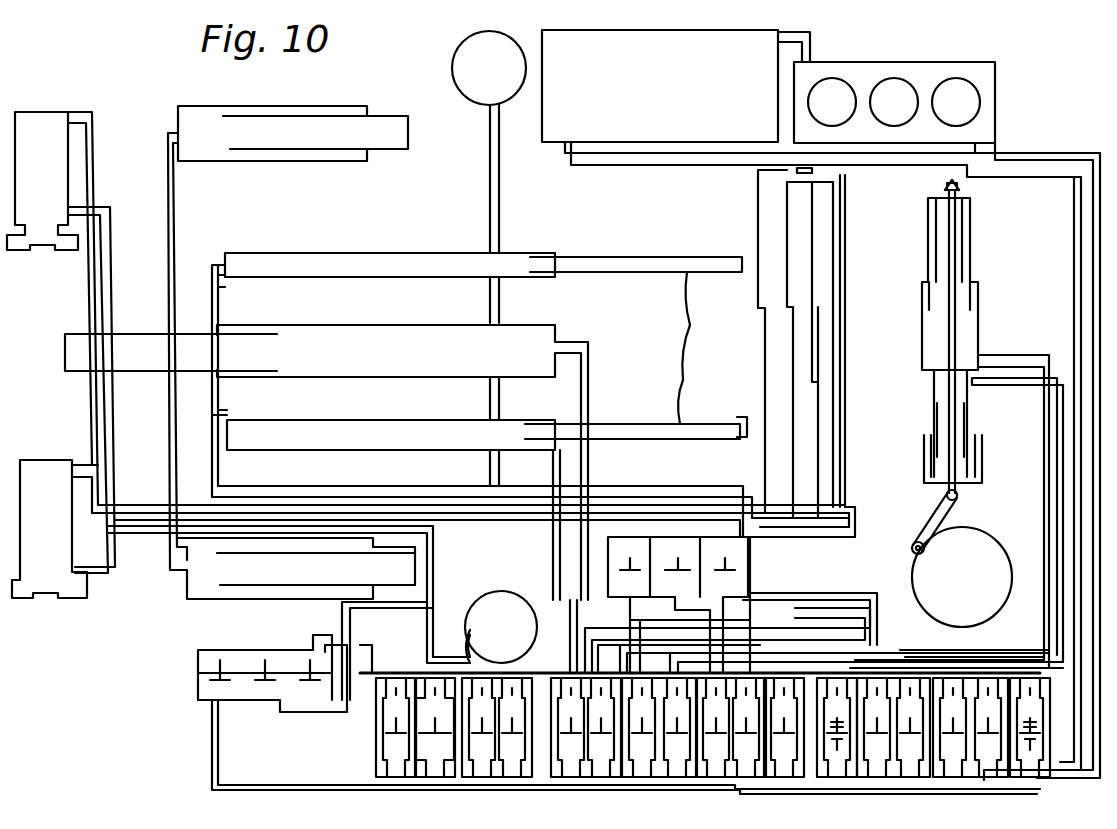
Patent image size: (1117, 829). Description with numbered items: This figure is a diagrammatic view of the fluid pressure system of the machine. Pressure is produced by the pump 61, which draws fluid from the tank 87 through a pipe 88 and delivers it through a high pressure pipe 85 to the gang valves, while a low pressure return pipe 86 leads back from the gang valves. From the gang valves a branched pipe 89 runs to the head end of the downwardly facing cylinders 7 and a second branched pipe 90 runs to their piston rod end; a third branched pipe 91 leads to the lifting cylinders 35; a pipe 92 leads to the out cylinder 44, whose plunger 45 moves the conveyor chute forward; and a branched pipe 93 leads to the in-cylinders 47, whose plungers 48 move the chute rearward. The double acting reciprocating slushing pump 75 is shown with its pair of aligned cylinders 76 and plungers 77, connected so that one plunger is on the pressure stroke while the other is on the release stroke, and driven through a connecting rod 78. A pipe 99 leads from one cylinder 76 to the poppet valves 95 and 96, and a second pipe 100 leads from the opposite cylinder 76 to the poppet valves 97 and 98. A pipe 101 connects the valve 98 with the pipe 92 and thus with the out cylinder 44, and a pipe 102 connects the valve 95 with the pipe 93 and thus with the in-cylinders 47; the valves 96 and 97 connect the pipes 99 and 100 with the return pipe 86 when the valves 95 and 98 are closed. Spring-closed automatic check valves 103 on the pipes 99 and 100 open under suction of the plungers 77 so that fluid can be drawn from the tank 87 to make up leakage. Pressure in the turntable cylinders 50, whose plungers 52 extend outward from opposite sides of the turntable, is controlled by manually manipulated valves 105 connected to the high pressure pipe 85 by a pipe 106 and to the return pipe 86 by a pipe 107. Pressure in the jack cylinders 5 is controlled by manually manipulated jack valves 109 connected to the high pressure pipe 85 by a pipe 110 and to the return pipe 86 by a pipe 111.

The fluid pressure cylinder 5 is at (456, 66).
The fluid pressure cylinder 7 is at (38, 112).
The cylinder 35 is at (283, 106).
The fluid pressure cylinder 44 is at (343, 325).
The plunger 45 is at (128, 345).
The fluid pressure cylinder 47 is at (366, 253).
The plunger 48 is at (677, 348).
The cylinder 50 is at (760, 290).
The plunger 52 is at (837, 237).
The pump 61 is at (888, 62).
The slushing pump 75 is at (920, 330).
The cylinder 76 is at (924, 295).
The plunger 77 is at (970, 240).
The connecting rod 78 is at (925, 510).
The high pressure pipe 85 is at (1025, 155).
The return pipe 86 is at (918, 170).
The tank 87 is at (686, 27).
The pipe 88 is at (790, 32).
The branched pipe 89 is at (87, 292).
The branched pipe 90 is at (112, 292).
The branched pipe 91 is at (433, 548).
The pipe 92 is at (590, 478).
The branched pipe 93 is at (553, 490).
The poppet valve 95 is at (885, 725).
The poppet valve 96 is at (912, 690).
The poppet valve 97 is at (960, 697).
The poppet valve 98 is at (992, 697).
The pipe 99 is at (1020, 385).
The pipe 100 is at (995, 355).
The pipe 101 is at (812, 628).
The pipe 102 is at (796, 593).
The automatic check valve 103 is at (1040, 697).
The manually manipulated valve 105 is at (615, 537).
The pipe 106 is at (1007, 655).
The pipe 107 is at (886, 648).
The jack valve 109 is at (216, 650).
The pipe 110 is at (212, 745).
The pipe 111 is at (370, 672).